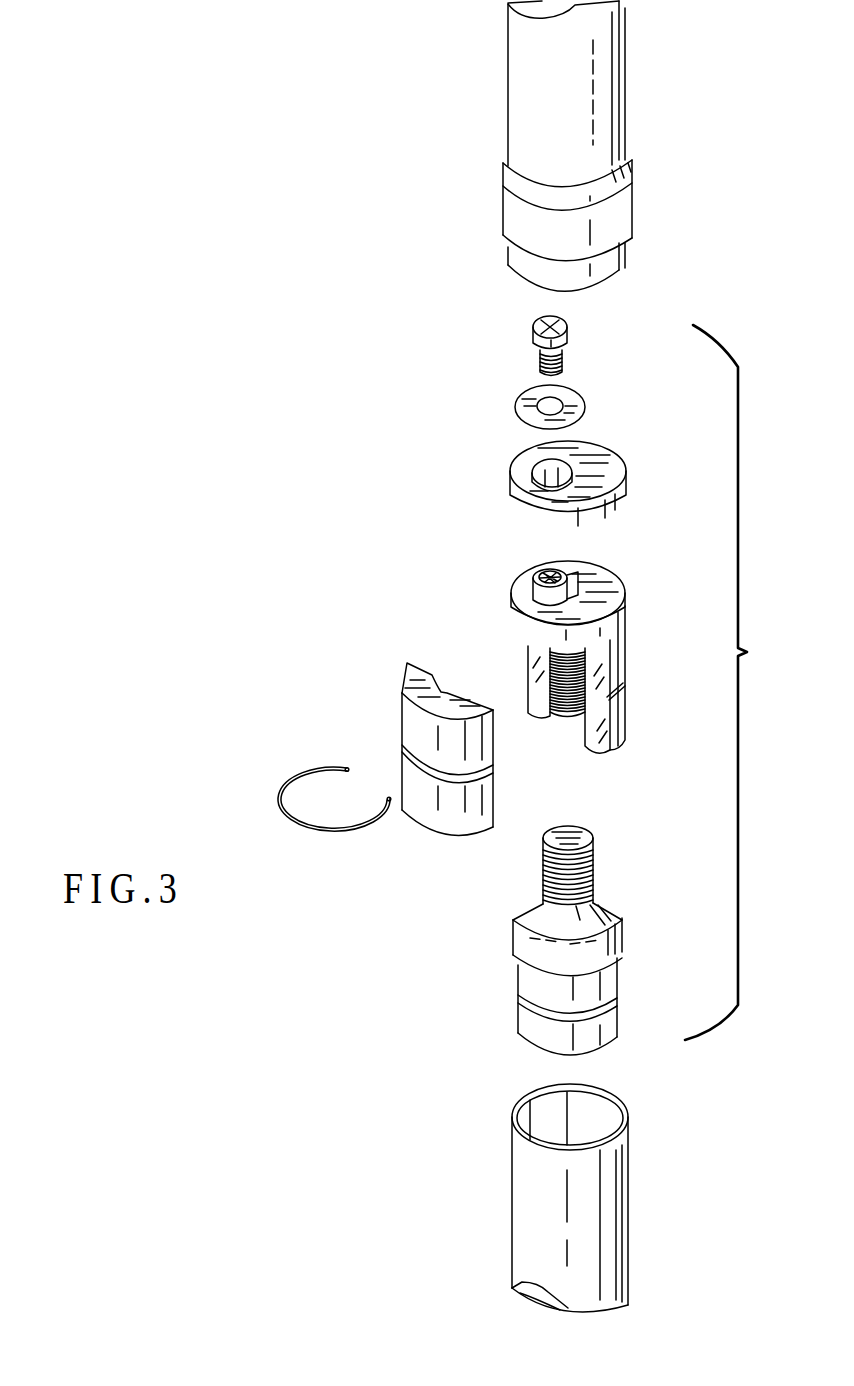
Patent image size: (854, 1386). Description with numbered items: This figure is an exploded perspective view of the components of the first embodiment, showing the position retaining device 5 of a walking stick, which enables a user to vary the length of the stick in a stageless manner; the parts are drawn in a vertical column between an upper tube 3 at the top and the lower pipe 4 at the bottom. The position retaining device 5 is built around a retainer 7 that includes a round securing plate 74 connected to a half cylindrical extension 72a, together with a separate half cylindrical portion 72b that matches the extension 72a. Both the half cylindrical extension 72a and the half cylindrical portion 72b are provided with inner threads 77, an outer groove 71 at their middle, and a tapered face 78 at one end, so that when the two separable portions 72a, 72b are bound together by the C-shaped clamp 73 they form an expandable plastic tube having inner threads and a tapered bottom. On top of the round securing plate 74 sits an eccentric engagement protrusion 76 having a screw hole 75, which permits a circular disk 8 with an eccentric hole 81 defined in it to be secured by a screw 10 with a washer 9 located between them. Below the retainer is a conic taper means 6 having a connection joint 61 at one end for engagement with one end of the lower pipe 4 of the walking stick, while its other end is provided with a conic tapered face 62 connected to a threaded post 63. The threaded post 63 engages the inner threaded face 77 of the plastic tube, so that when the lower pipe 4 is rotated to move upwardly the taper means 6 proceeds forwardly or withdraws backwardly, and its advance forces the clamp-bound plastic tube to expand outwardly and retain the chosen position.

The upper tube 3 is at (518, 127).
The lower pipe 4 is at (525, 1209).
The position retaining device 5 is at (730, 682).
The conic taper means 6 is at (500, 930).
The connection joint 61 is at (530, 1026).
The conic tapered face 62 is at (593, 930).
The threaded post 63 is at (593, 880).
The retainer 7 is at (395, 655).
The outer groove 71 is at (622, 688).
The half cylindrical extension 72a is at (627, 655).
The half cylindrical portion 72b is at (432, 812).
The C-shaped clamp 73 is at (310, 832).
The round securing plate 74 is at (512, 606).
The screw hole 75 is at (562, 572).
The eccentric engagement protrusion 76 is at (622, 588).
The inner threads 77 is at (566, 716).
The tapered face 78 is at (493, 827).
The circular disk 8 is at (626, 482).
The eccentric hole 81 is at (540, 472).
The washer 9 is at (585, 407).
The screw 10 is at (567, 328).